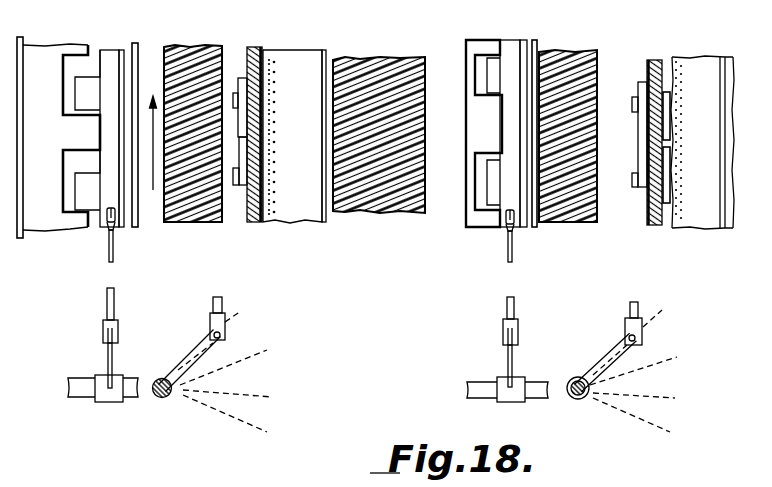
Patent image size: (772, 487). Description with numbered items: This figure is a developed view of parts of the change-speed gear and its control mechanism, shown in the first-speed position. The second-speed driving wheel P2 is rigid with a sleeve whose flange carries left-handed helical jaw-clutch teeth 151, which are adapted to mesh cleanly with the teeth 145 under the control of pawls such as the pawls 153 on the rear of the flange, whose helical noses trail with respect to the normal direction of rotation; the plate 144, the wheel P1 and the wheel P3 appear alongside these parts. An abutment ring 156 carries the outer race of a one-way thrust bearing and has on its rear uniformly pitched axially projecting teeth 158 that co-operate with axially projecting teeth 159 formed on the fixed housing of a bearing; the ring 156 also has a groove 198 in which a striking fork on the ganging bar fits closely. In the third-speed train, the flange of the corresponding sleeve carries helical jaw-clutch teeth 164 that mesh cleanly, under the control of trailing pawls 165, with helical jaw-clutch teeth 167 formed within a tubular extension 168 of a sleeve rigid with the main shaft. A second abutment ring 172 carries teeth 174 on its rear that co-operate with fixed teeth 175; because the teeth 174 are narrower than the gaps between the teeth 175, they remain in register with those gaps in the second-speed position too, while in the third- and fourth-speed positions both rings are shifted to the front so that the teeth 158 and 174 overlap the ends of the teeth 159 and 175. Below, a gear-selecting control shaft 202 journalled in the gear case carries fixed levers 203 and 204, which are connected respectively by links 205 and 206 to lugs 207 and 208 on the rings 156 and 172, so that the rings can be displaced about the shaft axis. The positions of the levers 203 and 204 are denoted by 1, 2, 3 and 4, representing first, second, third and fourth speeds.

The axially projecting teeth 159 is at (75, 132).
The axially projecting teeth 158 is at (87, 90).
The abutment ring 156 is at (110, 58).
The groove 198 is at (131, 213).
The lug 207 is at (114, 208).
The second-speed driving wheel P2 is at (190, 48).
The pawls 153 is at (242, 78).
The helical jaw-clutch teeth 151 is at (253, 48).
The teeth 145 is at (280, 70).
The plate 144 is at (313, 50).
The pulley drum P1 is at (387, 62).
The axially projecting teeth 175 is at (477, 135).
The axially projecting teeth 174 is at (487, 70).
The abutment ring 172 is at (510, 43).
The pulley drum P3 is at (568, 53).
The lug 208 is at (510, 210).
The pawls 165 is at (640, 82).
The helical jaw-clutch teeth 164 is at (653, 58).
The helical jaw-clutch teeth 167 is at (688, 67).
The tubular extension 168 is at (713, 57).
The link 205 is at (114, 292).
The link 206 is at (514, 299).
The lever 203 is at (113, 350).
The lever 204 is at (513, 360).
The gear-selecting control shaft 202 is at (83, 378).
The first-speed position 1 is at (425, 336).
The second-speed position 2 is at (435, 361).
The third-speed position 3 is at (436, 397).
The fourth-speed position 4 is at (433, 418).